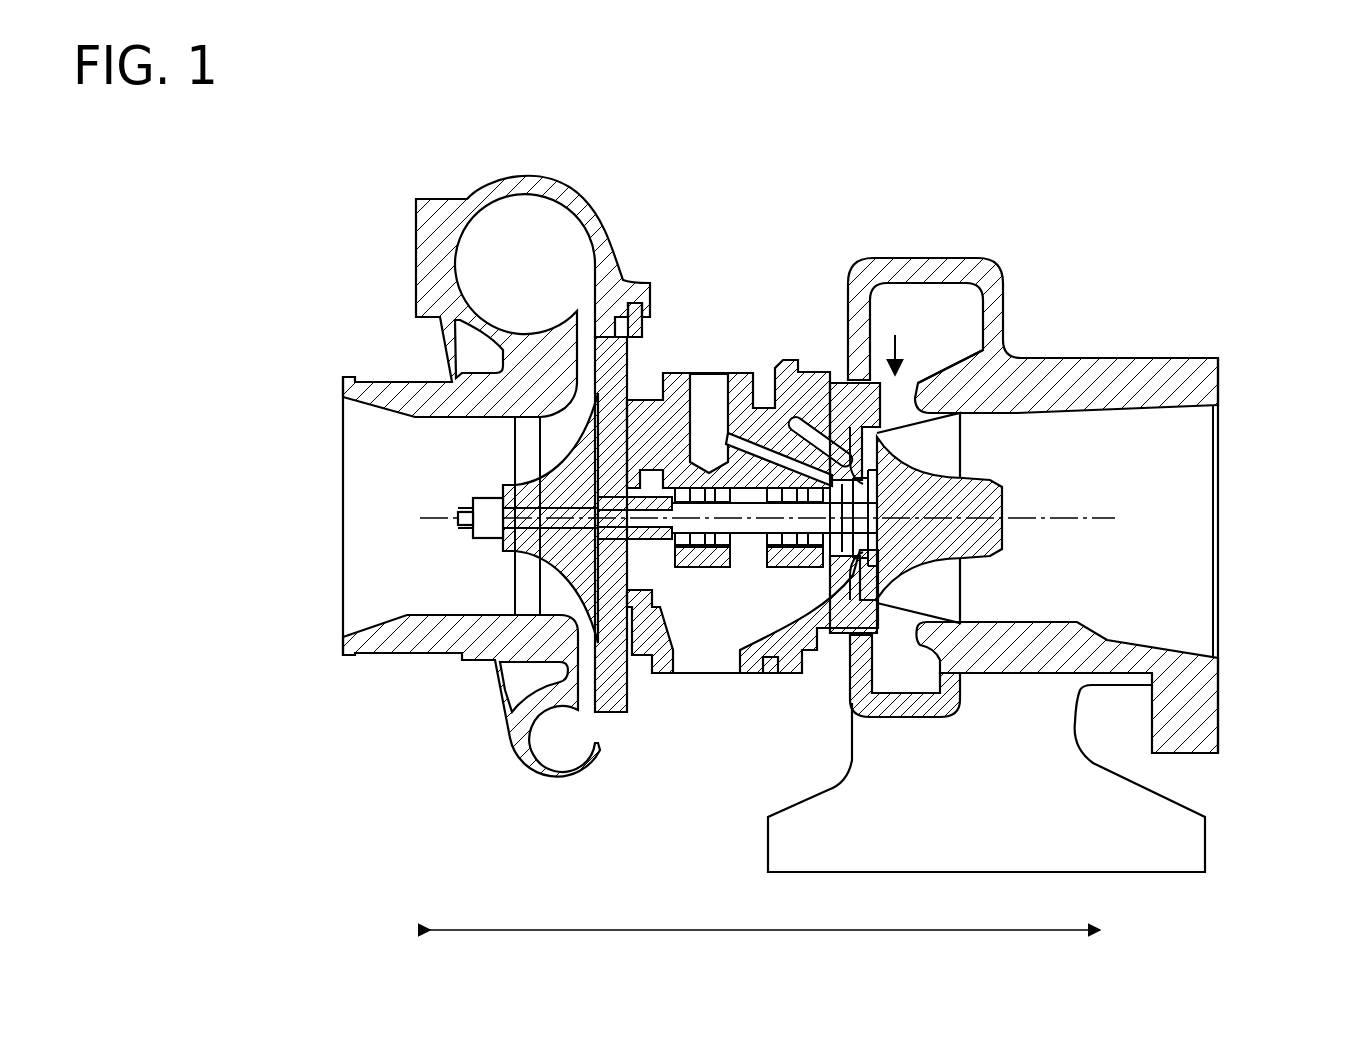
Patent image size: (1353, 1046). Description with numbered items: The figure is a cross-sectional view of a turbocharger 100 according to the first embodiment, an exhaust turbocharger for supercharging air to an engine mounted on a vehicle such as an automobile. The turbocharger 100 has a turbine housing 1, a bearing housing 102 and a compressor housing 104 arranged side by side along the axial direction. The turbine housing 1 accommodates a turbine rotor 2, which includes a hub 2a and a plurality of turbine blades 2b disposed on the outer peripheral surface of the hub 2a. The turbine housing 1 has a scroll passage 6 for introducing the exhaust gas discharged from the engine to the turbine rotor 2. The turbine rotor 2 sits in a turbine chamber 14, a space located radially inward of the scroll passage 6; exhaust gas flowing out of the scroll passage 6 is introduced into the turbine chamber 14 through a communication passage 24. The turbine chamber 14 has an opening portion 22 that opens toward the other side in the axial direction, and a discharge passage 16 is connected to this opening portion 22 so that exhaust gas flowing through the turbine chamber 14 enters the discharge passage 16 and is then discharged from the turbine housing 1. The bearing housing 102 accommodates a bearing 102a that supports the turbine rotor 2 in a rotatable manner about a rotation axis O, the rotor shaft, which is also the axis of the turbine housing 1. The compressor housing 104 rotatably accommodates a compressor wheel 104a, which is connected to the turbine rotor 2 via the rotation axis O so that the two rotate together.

The turbocharger 100 is at (1221, 146).
The turbine housing 1 is at (1008, 527).
The turbine rotor 2 is at (989, 448).
The hub 2a is at (960, 470).
The turbine blades 2b is at (980, 455).
The scroll passage 6 is at (1003, 265).
The turbine chamber 14 is at (848, 403).
The discharge passage 16 is at (1140, 356).
The opening portion 22 is at (1043, 612).
The communication passage 24 is at (940, 390).
The bearing housing 102 is at (755, 332).
The bearing 102a is at (795, 545).
The compressor housing 104 is at (368, 212).
The compressor wheel 104a is at (522, 583).
The rotation axis O is at (1088, 533).